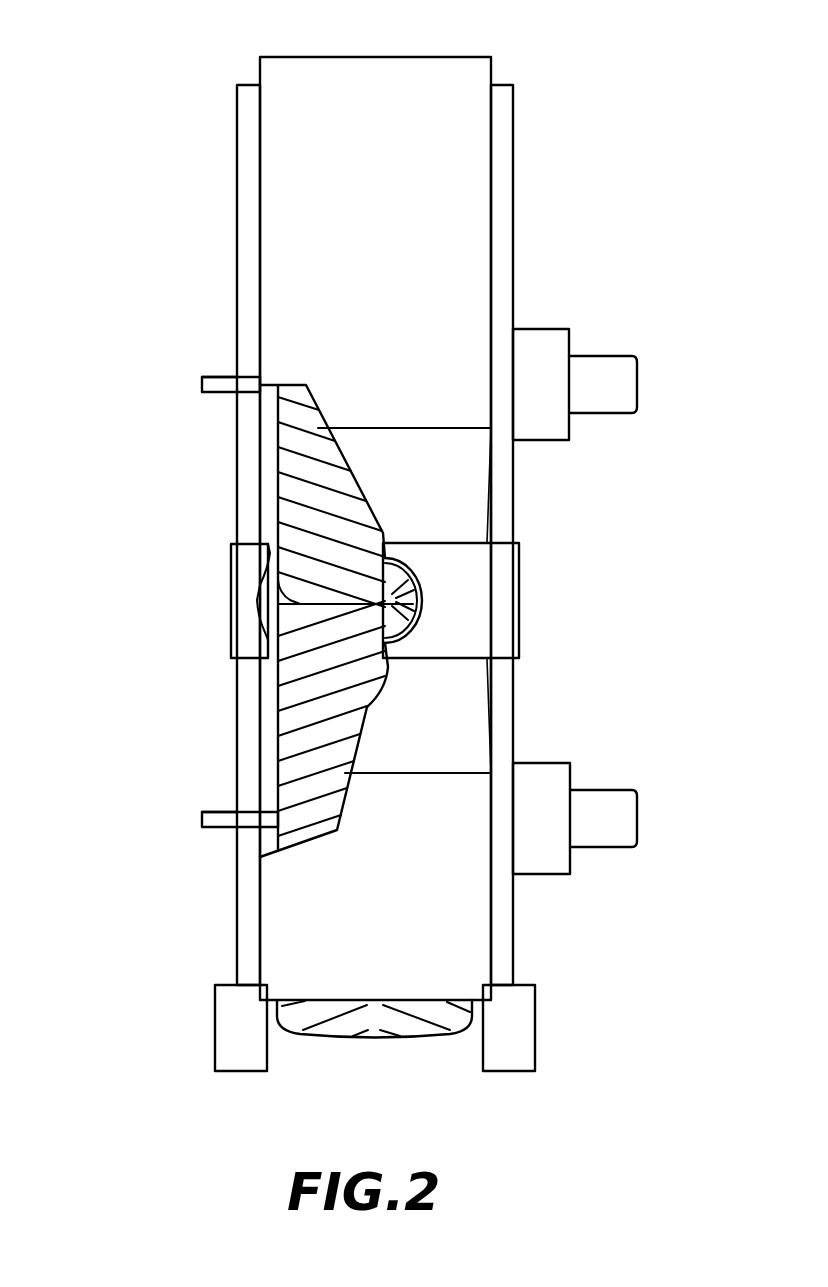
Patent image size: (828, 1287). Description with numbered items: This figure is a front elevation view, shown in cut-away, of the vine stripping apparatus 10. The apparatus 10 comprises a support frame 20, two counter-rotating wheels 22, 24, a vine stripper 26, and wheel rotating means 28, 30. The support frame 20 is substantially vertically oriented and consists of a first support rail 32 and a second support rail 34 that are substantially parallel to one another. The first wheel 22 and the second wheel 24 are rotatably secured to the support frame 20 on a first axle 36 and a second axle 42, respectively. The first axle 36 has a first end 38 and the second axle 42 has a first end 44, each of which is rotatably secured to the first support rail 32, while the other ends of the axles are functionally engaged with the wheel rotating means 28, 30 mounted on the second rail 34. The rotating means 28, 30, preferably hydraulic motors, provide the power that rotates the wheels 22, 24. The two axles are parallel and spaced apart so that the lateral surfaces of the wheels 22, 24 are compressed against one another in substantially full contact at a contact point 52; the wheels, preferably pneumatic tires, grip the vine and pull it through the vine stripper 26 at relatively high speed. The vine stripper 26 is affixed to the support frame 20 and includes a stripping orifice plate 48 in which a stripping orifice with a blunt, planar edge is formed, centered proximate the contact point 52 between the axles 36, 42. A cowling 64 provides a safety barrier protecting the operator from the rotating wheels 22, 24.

The vine stripping apparatus 10 is at (137, 226).
The support frame 20 is at (228, 1030).
The first wheel 22 is at (285, 480).
The second wheel 24 is at (290, 695).
The vine stripper 26 is at (497, 613).
The wheel rotating means 28 is at (550, 337).
The wheel rotating means 30 is at (548, 772).
The first support rail 32 is at (250, 445).
The second support rail 34 is at (497, 493).
The first axle 36 is at (203, 386).
The first end of first axle 38 is at (216, 378).
The second axle 42 is at (203, 821).
The first end of second axle 44 is at (216, 812).
The stripping orifice plate 48 is at (481, 590).
The contact point 52 is at (340, 606).
The cowling 64 is at (392, 255).